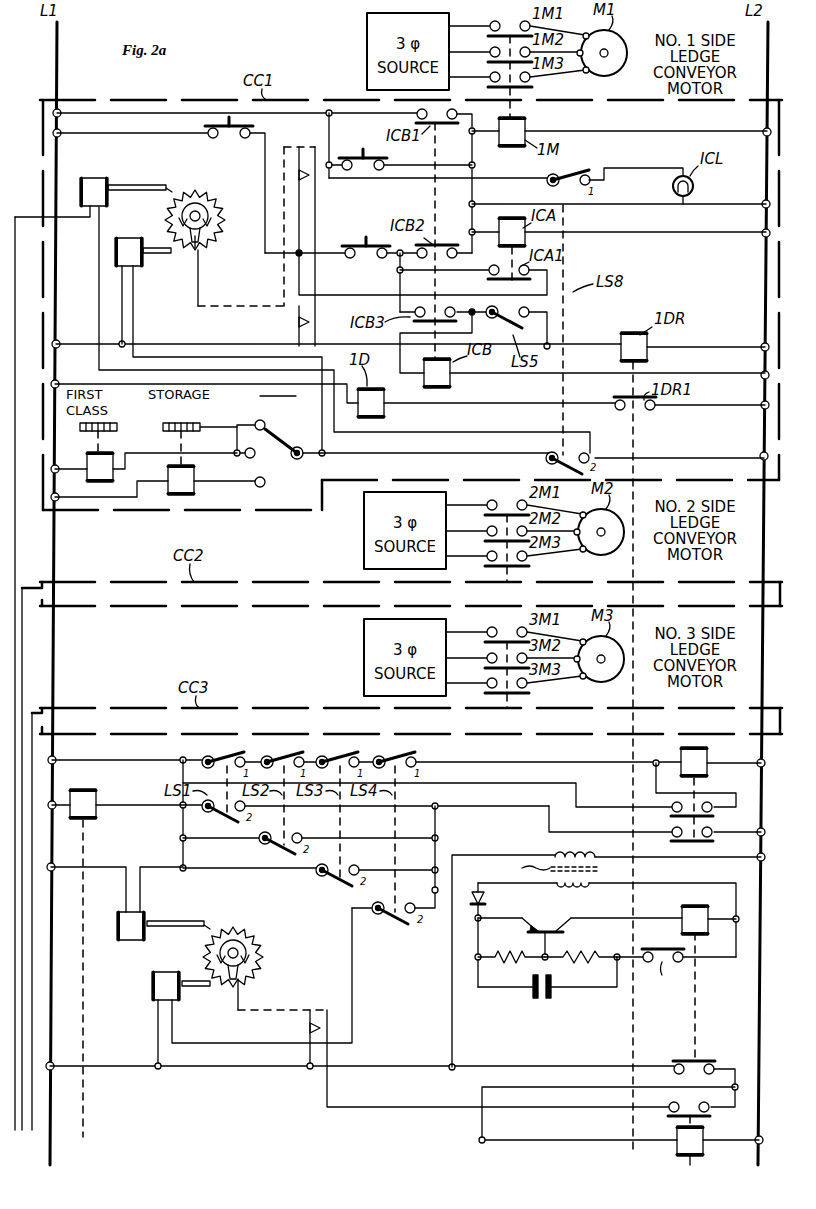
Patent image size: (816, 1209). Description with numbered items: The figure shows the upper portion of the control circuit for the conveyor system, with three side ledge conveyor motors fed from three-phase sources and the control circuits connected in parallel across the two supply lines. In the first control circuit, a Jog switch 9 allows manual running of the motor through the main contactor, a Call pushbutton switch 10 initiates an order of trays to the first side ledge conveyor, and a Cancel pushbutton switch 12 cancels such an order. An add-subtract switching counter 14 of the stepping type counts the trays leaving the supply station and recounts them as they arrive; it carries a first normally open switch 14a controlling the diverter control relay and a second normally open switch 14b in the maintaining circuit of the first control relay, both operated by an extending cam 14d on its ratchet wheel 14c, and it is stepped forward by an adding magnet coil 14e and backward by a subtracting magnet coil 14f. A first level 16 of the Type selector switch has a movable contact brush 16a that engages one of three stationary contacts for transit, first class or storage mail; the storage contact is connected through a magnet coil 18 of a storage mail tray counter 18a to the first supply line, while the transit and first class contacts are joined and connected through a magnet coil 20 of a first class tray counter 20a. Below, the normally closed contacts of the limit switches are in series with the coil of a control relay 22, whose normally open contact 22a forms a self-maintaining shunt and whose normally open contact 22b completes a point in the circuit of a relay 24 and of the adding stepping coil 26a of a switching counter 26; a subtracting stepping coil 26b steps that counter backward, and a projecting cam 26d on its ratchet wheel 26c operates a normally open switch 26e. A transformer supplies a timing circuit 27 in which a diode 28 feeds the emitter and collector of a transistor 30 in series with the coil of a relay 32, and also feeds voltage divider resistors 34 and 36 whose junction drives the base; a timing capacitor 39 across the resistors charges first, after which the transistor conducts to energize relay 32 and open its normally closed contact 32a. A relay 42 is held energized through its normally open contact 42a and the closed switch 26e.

The Jog switch 9 is at (384, 157).
The Call pushbutton switch 10 is at (342, 238).
The Cancel pushbutton switch 12 is at (248, 126).
The add-subtract switching counter 14 is at (222, 257).
The first normally open switch 14a is at (298, 323).
The second normally open switch 14b is at (303, 156).
The ratchet wheel 14c is at (227, 188).
The extending cam 14d is at (194, 258).
The adding magnet coil 14e is at (97, 178).
The subtracting magnet coil 14f is at (127, 238).
The first level of Type selector switch No. 1 16 is at (397, 433).
The movable contact brush 16a is at (299, 443).
The magnet coil 18 is at (188, 488).
The storage mail tray counter 18a is at (216, 416).
The magnet coil 20 is at (87, 458).
The first class transit and first class mail tray counter 20a is at (112, 430).
The control relay 22 is at (676, 758).
The normally open contact 22a is at (670, 812).
The normally open contact 22b is at (670, 838).
The relay 24 is at (98, 797).
The switching counter 26 is at (292, 964).
The adding stepping coil 26a is at (150, 914).
The subtracting stepping coil 26b is at (152, 987).
The ratchet wheel 26c is at (266, 926).
The projecting cam 26d is at (234, 990).
The normally open switch 26e is at (307, 1029).
The timing circuit 27 is at (606, 959).
The diode 28 is at (485, 896).
The transistor 30 is at (545, 928).
The relay 32 is at (682, 910).
The normally closed contact 32a is at (680, 1062).
The voltage divider resistor 34 is at (516, 963).
The voltage divider resistor 36 is at (585, 954).
The timing capacitor 39 is at (536, 1000).
The relay 42 is at (702, 1137).
The normally open contact 42a is at (678, 1104).